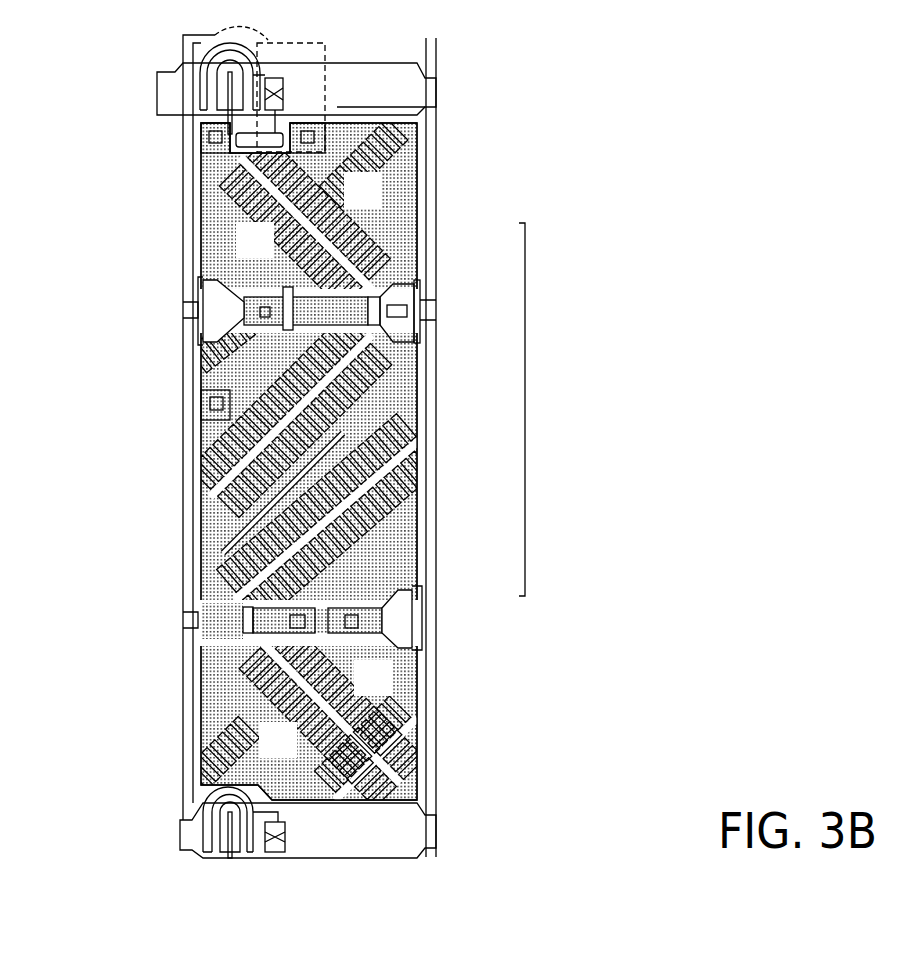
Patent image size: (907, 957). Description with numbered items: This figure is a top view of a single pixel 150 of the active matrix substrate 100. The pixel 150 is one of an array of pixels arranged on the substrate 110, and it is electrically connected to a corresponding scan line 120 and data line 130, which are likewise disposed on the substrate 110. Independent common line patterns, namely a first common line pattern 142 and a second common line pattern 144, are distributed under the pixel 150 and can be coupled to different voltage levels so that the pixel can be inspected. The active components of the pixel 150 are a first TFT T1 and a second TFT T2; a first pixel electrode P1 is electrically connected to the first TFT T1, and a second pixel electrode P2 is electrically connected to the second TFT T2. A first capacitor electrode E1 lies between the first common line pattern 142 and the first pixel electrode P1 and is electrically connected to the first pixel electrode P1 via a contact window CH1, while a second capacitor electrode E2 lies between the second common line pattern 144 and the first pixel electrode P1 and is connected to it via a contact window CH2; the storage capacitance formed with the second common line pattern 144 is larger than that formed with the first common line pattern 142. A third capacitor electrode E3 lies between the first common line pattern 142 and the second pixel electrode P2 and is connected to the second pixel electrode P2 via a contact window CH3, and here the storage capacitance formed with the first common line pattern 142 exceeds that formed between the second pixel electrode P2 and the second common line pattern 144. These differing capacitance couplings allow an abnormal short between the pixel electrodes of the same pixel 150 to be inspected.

The active matrix substrate 100 is at (541, 790).
The substrate 110 is at (420, 128).
The scan line 120 is at (395, 106).
The data line 130 is at (183, 168).
The first common line pattern 142 is at (183, 313).
The second common line pattern 144 is at (183, 622).
The pixel 150 is at (525, 413).
The contact window CH1 is at (207, 354).
The contact window CH2 is at (396, 662).
The contact window CH3 is at (418, 313).
The first capacitor electrode E1 is at (220, 277).
The second capacitor electrode E2 is at (225, 613).
The third capacitor electrode E3 is at (420, 293).
The first pixel electrode P1 is at (314, 461).
The second pixel electrode P2 is at (320, 467).
The first TFT T1 is at (232, 44).
The second TFT T2 is at (326, 48).